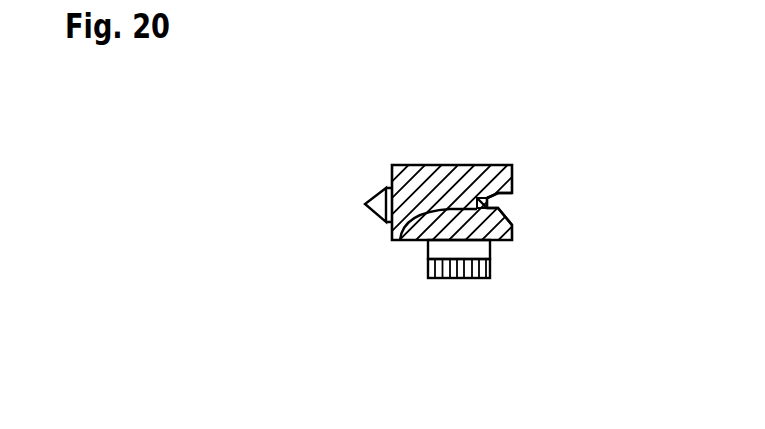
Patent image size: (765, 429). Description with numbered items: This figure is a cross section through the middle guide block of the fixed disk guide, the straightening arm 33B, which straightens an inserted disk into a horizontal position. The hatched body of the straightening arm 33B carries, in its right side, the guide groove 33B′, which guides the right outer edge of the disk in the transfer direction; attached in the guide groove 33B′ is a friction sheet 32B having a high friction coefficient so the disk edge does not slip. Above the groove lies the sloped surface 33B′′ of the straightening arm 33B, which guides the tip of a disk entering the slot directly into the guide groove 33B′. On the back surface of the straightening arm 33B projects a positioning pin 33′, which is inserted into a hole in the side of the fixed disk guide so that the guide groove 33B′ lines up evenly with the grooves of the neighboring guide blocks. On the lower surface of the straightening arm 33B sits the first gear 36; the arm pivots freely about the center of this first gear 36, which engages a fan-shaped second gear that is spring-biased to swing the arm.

The straightening arm 33B is at (455, 165).
The positioning pin 33′ is at (371, 200).
The sloped surface 33B′′ is at (512, 193).
The guide groove 33B′ is at (495, 207).
The friction sheet 32B is at (405, 242).
The first gear 36 is at (468, 273).